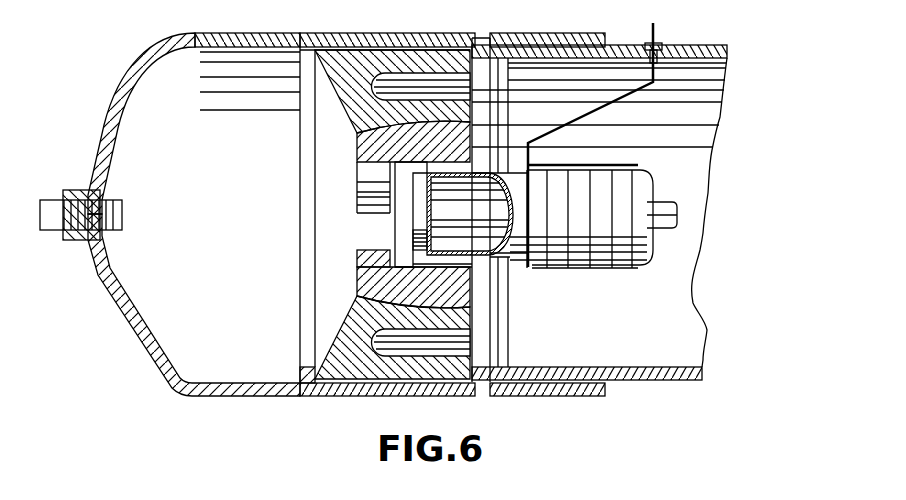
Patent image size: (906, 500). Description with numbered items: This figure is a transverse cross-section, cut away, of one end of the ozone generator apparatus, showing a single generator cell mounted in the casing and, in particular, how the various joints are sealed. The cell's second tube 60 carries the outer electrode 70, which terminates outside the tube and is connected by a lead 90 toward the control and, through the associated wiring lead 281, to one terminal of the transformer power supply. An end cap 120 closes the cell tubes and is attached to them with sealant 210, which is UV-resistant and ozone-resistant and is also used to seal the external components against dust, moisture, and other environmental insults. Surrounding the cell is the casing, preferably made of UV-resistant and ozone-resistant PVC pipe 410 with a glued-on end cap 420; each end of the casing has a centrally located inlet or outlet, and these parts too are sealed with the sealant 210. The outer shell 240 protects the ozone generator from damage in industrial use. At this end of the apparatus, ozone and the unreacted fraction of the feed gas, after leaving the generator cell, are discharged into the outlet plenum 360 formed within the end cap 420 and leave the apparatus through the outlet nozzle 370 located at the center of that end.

The second tube 60 is at (497, 257).
The outer electrode 70 is at (583, 270).
The lead 90 is at (655, 33).
The end cap 120 is at (403, 238).
The sealant 210 is at (397, 37).
The outer shell 240 is at (685, 378).
The lead 281 is at (195, 0).
The outlet plenum 360 is at (143, 307).
The outlet nozzle 370 is at (50, 207).
The PVC pipe 410 is at (723, 52).
The end cap 420 is at (145, 65).